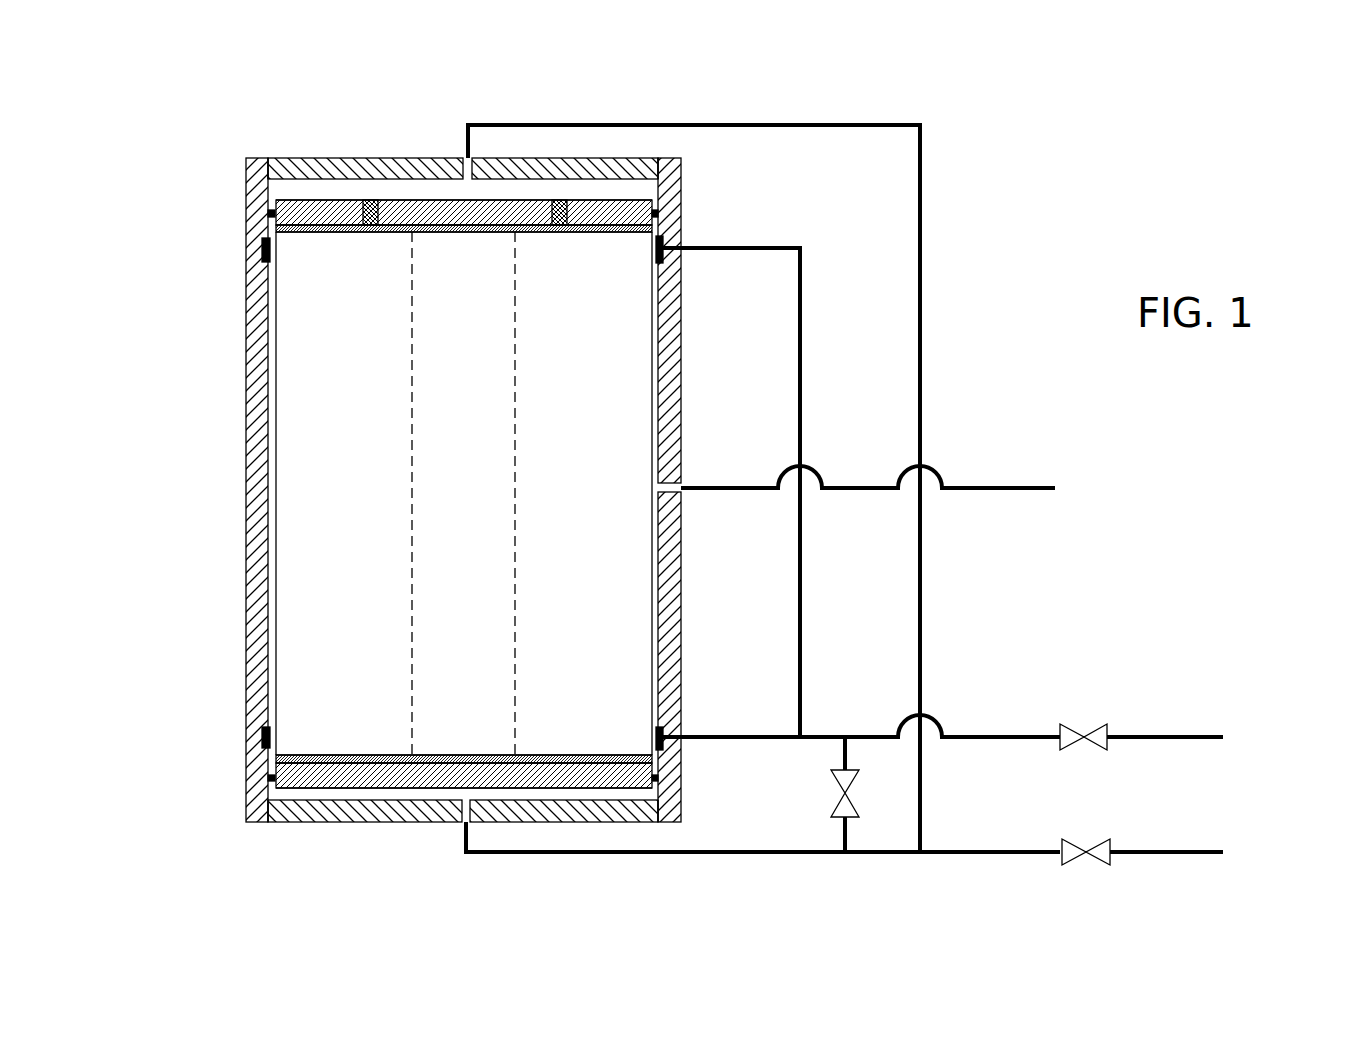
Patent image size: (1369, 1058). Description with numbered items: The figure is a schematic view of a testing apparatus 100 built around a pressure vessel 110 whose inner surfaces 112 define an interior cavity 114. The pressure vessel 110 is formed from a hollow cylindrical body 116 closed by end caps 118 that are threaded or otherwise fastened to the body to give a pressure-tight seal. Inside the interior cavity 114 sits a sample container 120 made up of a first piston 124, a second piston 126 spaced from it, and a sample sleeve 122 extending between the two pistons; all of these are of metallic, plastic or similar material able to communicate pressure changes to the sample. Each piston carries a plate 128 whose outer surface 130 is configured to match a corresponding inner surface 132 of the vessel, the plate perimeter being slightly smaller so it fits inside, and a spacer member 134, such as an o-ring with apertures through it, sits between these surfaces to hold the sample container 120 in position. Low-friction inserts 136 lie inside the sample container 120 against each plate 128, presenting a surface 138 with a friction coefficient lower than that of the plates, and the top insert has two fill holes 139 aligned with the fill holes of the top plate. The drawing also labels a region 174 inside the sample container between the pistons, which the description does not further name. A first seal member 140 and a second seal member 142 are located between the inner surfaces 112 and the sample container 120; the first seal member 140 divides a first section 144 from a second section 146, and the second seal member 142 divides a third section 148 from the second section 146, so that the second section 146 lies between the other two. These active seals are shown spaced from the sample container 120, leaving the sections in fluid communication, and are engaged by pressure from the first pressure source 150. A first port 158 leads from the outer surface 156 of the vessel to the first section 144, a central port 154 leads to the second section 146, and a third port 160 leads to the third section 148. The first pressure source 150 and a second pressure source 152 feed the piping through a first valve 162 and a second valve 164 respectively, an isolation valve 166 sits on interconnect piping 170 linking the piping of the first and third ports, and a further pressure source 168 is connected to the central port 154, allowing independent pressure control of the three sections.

The testing apparatus 100 is at (1010, 222).
The pressure vessel 110 is at (200, 313).
The inner surfaces 112 is at (287, 183).
The interior cavity 114 is at (343, 188).
The hollow cylindrical body 116 is at (247, 487).
The end caps 118 is at (390, 165).
The sample container 120 is at (276, 674).
The sample sleeve 122 is at (275, 585).
The first piston 124 is at (276, 226).
The second piston 126 is at (270, 778).
The plate 128 is at (440, 205).
The outer surface 130 is at (662, 203).
The corresponding inner surface 132 is at (663, 233).
The spacer member 134 is at (270, 210).
The inserts 136 is at (340, 236).
The surface 138 is at (440, 233).
The fill holes 139 is at (393, 233).
The first seal member 140 is at (665, 255).
The second seal member 142 is at (666, 725).
The first section 144 is at (605, 195).
The second section 146 is at (660, 394).
The third section 148 is at (658, 759).
The first pressure source 150 is at (989, 714).
The second pressure source 152 is at (1261, 831).
The central port 154 is at (682, 492).
The outer surface 156 is at (682, 632).
The first port 158 is at (466, 152).
The third port 160 is at (458, 825).
The first valve 162 is at (1103, 724).
The second valve 164 is at (1068, 864).
The isolation valve 166 is at (858, 815).
The pressure source 168 is at (1084, 465).
The interconnect piping 170 is at (842, 833).
The sample region 174 is at (518, 714).